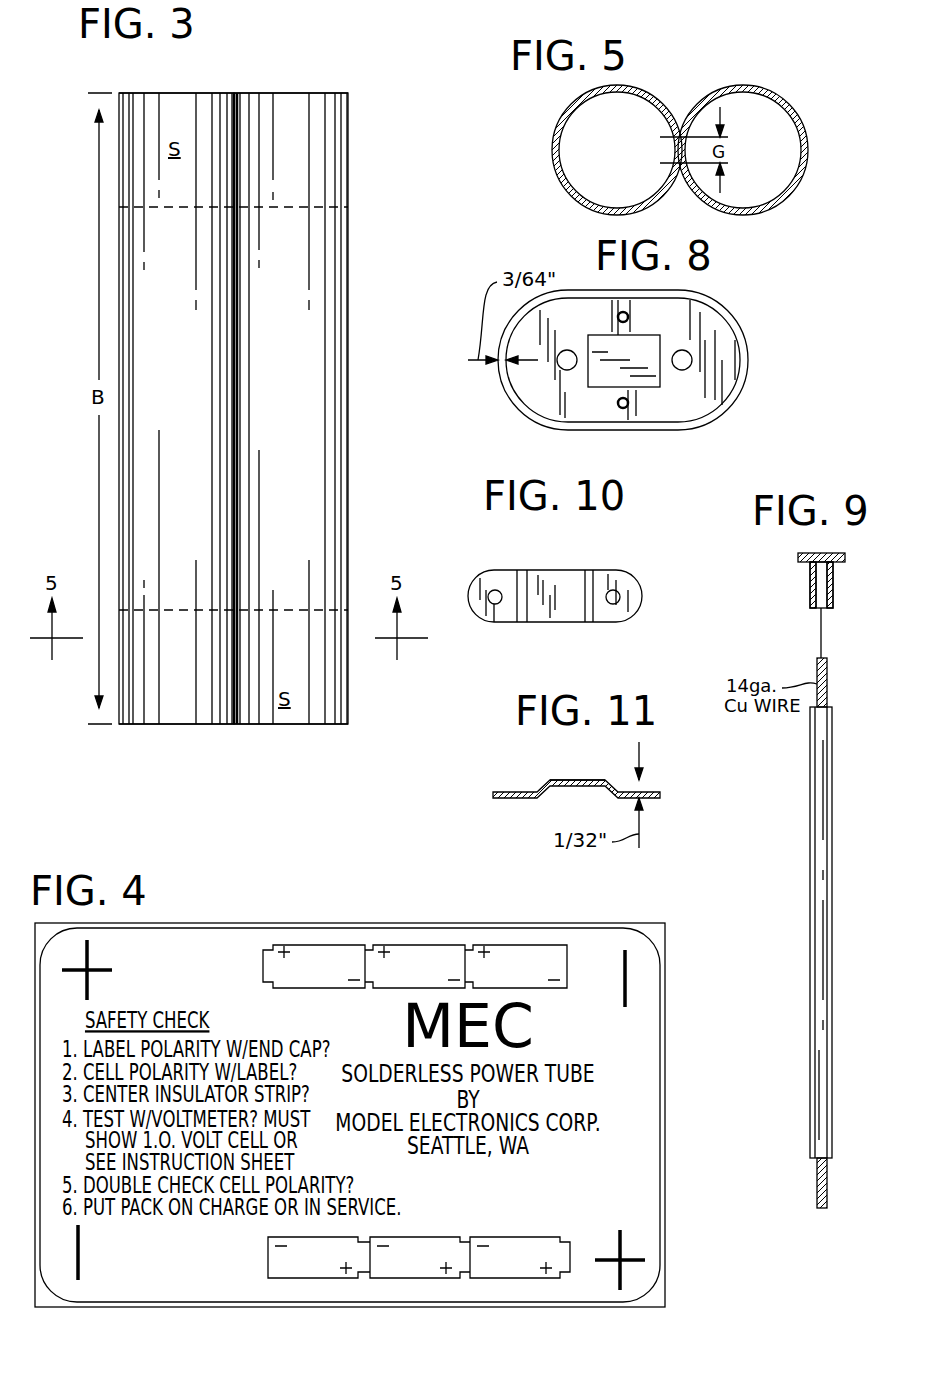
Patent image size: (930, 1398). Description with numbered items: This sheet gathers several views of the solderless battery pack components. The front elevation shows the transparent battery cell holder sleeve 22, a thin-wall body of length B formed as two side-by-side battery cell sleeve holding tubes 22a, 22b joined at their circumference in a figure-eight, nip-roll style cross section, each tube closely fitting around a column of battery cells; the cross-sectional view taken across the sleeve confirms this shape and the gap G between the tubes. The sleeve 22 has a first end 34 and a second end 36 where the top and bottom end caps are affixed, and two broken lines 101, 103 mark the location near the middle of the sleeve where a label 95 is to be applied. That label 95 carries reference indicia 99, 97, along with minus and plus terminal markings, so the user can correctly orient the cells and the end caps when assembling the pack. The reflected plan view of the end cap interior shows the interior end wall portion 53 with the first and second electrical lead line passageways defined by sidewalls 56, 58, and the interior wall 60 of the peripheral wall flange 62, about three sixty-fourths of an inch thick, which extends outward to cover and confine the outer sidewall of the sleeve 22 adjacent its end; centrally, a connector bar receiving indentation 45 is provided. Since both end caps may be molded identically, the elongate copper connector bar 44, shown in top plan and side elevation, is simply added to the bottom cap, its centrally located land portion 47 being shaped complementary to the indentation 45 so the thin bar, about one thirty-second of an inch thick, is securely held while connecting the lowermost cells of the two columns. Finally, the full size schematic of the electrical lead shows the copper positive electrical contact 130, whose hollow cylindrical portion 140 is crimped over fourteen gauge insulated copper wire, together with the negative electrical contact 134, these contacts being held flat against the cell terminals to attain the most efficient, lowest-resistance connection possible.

In FIG. 3, the battery cell holder sleeve 22 is at (251, 399).
In FIG. 5, the battery cell holder sleeve 22 is at (680, 123).
In FIG. 3, the battery cell sleeve holding tube 22a is at (328, 724).
In FIG. 5, the battery cell sleeve holding tube 22a is at (702, 95).
In FIG. 3, the battery cell sleeve holding tube 22b is at (190, 724).
In FIG. 5, the battery cell sleeve holding tube 22b is at (632, 90).
In FIG. 3, the first end 34 is at (178, 93).
In FIG. 3, the second end 36 is at (160, 724).
In FIG. 3, the broken line 101 is at (265, 207).
In FIG. 3, the broken line 103 is at (283, 610).
In FIG. 8, the interior end wall portion 53 is at (623, 360).
In FIG. 8, the connector bar receiving indentation 45 is at (648, 387).
In FIG. 8, the sidewall 58 is at (567, 350).
In FIG. 8, the sidewall 56 is at (692, 360).
In FIG. 8, the interior wall 60 is at (745, 330).
In FIG. 8, the peripheral wall flange 62 is at (738, 398).
In FIG. 10, the connector bar 44 is at (592, 567).
In FIG. 11, the connector bar 44 is at (550, 802).
In FIG. 10, the land portion 47 is at (541, 585).
In FIG. 11, the land portion 47 is at (563, 781).
In FIG. 9, the positive electrical contact 130 is at (798, 557).
In FIG. 9, the hollow cylindrical portion 140 is at (812, 590).
In FIG. 9, the negative electrical contact 134 is at (815, 768).
In FIG. 4, the label 95 is at (688, 1146).
In FIG. 4, the reference indicia 99 is at (408, 945).
In FIG. 4, the reference indicia 97 is at (510, 1278).